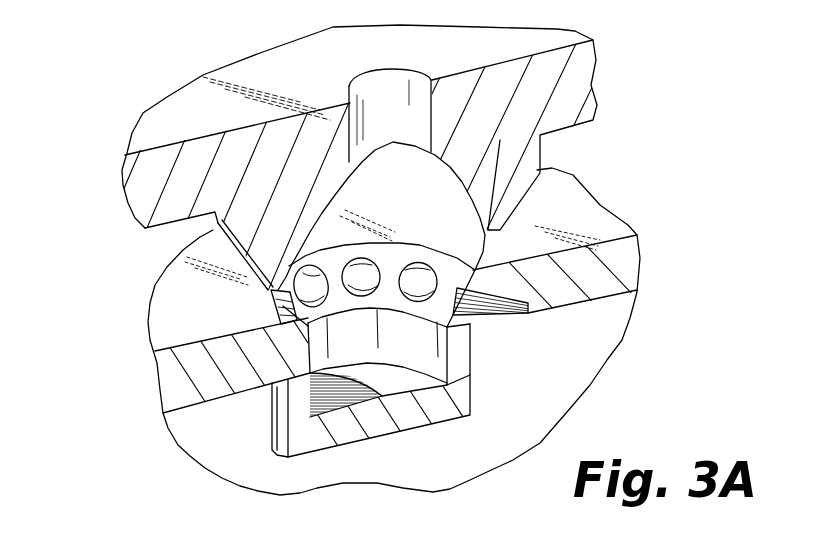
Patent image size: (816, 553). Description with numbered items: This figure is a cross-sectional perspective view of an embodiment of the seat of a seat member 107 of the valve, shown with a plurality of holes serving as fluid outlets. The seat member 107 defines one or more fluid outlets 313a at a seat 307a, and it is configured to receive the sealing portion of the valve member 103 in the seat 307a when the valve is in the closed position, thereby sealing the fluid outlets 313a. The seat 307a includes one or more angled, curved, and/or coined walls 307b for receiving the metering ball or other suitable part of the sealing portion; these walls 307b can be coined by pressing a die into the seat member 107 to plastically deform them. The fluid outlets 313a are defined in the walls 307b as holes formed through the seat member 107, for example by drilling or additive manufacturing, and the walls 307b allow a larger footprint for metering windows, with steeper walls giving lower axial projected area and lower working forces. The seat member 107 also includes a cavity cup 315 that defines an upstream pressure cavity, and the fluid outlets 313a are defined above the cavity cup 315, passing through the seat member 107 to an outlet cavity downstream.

The valve member 103 is at (169, 118).
The seat member 107 is at (152, 398).
The seat 307a is at (268, 302).
The angled, curved, and/or coined walls 307b is at (390, 262).
The fluid outlets 313a is at (408, 303).
The cavity cup 315 is at (427, 408).